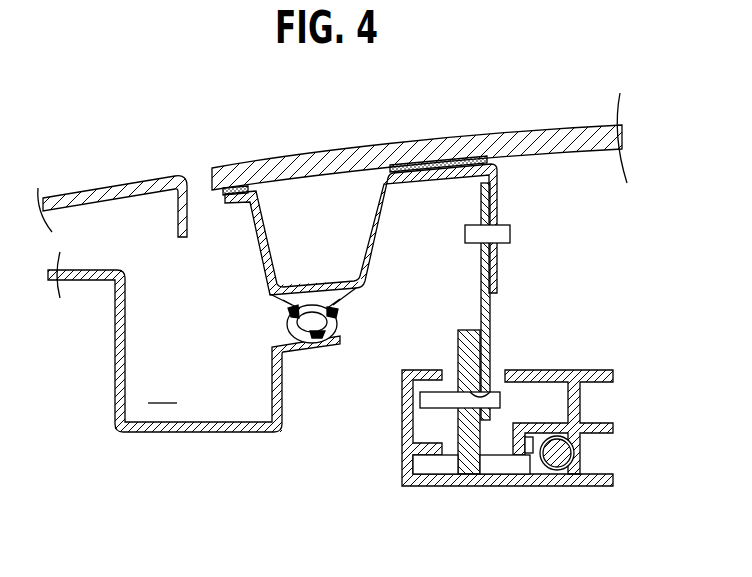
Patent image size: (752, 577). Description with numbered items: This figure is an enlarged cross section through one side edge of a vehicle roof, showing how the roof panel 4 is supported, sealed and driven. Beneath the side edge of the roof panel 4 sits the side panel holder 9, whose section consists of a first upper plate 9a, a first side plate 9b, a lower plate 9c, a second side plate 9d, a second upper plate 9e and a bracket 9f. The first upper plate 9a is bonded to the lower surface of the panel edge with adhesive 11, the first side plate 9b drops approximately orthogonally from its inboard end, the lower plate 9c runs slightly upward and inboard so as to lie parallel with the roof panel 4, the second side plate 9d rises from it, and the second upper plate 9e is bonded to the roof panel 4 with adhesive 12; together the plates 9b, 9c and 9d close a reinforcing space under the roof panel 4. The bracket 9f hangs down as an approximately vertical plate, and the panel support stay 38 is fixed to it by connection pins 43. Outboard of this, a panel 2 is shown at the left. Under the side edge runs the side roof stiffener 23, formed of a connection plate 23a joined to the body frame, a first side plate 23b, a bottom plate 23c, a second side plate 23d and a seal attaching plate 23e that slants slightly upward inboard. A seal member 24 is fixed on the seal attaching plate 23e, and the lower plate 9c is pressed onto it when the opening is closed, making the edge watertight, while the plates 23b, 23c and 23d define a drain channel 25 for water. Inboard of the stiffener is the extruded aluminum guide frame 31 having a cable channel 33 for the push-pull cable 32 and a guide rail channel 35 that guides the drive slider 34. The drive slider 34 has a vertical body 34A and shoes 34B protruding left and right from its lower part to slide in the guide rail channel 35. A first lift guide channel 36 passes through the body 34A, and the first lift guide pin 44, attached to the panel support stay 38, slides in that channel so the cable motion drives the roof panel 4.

The first panel 2 is at (128, 184).
The roof panel 4 is at (558, 128).
The side panel holder 9 is at (359, 190).
The first upper plate 9a is at (228, 203).
The first side plate 9b is at (254, 258).
The lower plate 9c is at (318, 288).
The second side plate 9d is at (380, 232).
The second upper plate 9e is at (457, 165).
The bracket 9f is at (498, 206).
The adhesive 11 is at (232, 186).
The adhesive 12 is at (418, 164).
The side roof stiffener 23 is at (197, 371).
The connection plate 23a is at (76, 282).
The first side plate 23b is at (113, 372).
The bottom plate 23c is at (178, 433).
The second side plate 23d is at (270, 380).
The seal attaching plate 23e is at (307, 352).
The seal member 24 is at (290, 321).
The drain channel 25 is at (162, 388).
The guide frame 31 is at (487, 451).
The push-pull cable 32 is at (582, 456).
The cable channel 33 is at (563, 477).
The drive slider 34 is at (459, 393).
The body 34A is at (457, 345).
The shoes 34B is at (440, 477).
The guide rail channel 35 is at (420, 477).
The first lift guide channel 36 is at (485, 393).
The panel support stay 38 is at (491, 316).
The connection pins 43 is at (511, 236).
The first lift guide pin 44 is at (420, 400).